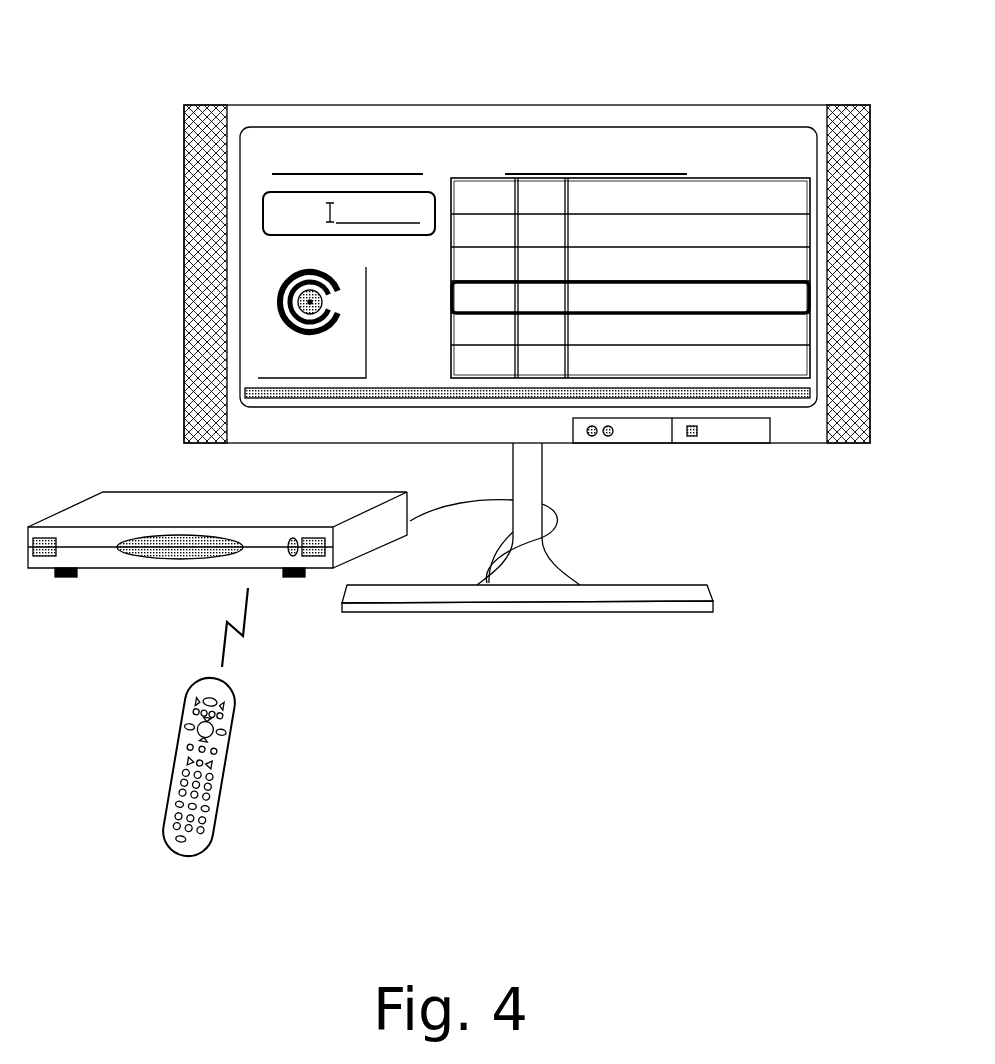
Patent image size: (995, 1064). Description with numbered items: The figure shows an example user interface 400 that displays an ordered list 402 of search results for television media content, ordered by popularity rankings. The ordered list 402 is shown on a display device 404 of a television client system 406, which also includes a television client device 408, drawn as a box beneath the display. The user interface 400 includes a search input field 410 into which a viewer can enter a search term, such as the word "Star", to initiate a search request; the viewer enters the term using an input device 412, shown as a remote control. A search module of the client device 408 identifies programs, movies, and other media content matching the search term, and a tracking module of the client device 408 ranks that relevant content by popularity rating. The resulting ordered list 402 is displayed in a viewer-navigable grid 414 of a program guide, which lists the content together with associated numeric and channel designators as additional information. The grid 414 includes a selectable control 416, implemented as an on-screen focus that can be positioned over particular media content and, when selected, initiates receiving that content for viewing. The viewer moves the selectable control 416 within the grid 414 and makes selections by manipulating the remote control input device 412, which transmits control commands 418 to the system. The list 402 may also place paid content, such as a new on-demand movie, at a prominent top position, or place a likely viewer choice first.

The user interface 400 is at (580, 128).
The ordered list 402 is at (627, 152).
The display device 404 is at (277, 103).
The television client system 406 is at (145, 259).
The television client device 408 is at (148, 500).
The search input field 410 is at (418, 207).
The input device 412 is at (180, 747).
The viewer-navigable grid 414 is at (730, 178).
The selectable control 416 is at (452, 307).
The control commands 418 is at (243, 627).